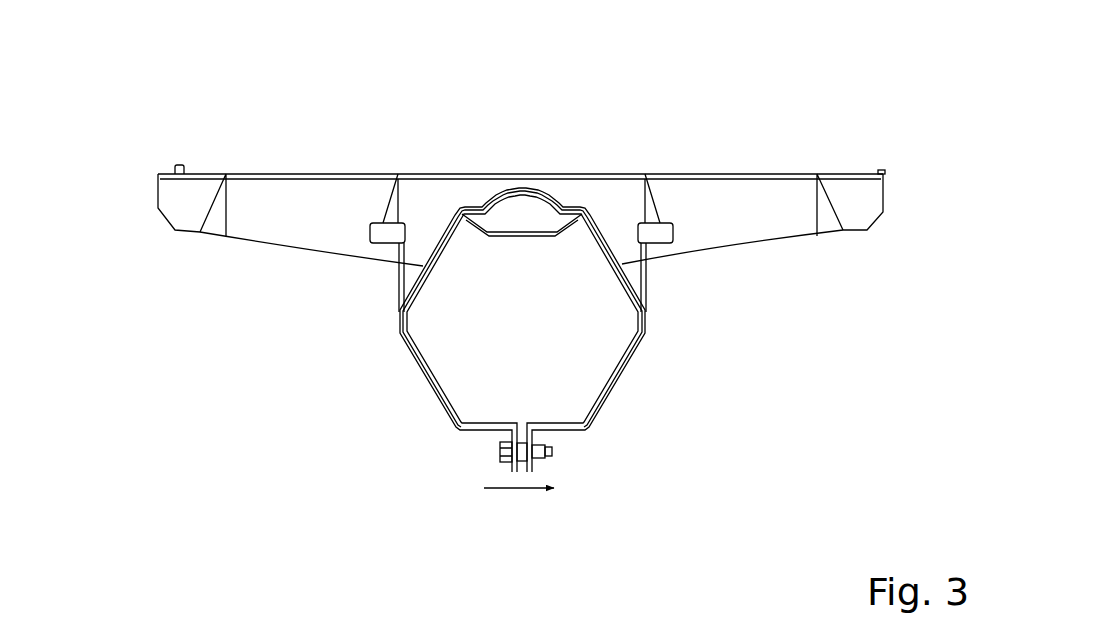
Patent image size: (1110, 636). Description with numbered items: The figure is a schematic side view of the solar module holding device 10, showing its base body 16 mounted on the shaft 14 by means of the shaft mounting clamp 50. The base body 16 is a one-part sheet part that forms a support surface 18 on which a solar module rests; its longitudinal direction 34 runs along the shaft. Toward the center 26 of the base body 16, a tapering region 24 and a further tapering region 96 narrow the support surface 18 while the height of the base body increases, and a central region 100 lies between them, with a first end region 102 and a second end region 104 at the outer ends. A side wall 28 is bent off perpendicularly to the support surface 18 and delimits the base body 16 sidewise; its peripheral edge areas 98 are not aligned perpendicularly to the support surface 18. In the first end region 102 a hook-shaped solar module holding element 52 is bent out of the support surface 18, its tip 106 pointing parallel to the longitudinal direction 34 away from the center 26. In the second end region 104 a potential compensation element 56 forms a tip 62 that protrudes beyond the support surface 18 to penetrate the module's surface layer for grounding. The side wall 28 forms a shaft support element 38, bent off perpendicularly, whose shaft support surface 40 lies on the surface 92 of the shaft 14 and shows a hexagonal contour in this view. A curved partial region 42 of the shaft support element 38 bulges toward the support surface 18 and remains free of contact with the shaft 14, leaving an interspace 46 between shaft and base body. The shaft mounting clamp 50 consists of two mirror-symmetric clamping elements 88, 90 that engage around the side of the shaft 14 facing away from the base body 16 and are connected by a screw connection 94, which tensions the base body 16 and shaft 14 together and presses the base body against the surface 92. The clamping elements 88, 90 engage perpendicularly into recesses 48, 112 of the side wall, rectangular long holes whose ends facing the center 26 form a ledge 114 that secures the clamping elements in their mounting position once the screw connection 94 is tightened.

The solar module holding device 10 is at (717, 136).
The shaft 14 is at (492, 340).
The base body 16 is at (780, 207).
The support surface 18 is at (748, 171).
The tapering region 24 is at (295, 263).
The center 26 is at (514, 164).
The side wall 28 is at (247, 211).
The longitudinal direction 34 is at (512, 490).
The shaft support element 38 is at (601, 241).
The shaft support surface 40 is at (443, 253).
The partial region 42 is at (528, 211).
The interspace 46 is at (518, 223).
The recess 48 is at (384, 232).
The shaft mounting clamp 50 is at (614, 397).
The solar module holding element 52 is at (175, 162).
The potential compensation element 56 is at (880, 167).
The tip 62 is at (887, 168).
The clamping element 88 is at (450, 418).
The clamping element 90 is at (602, 410).
The surface 92 is at (592, 213).
The screw connection 94 is at (498, 467).
The further tapering region 96 is at (730, 262).
The edge area 98 is at (792, 240).
The central region 100 is at (588, 152).
The first end region 102 is at (202, 164).
The second end region 104 is at (852, 162).
The tip 106 is at (177, 166).
The recess 112 is at (656, 233).
The ledge 114 is at (393, 251).